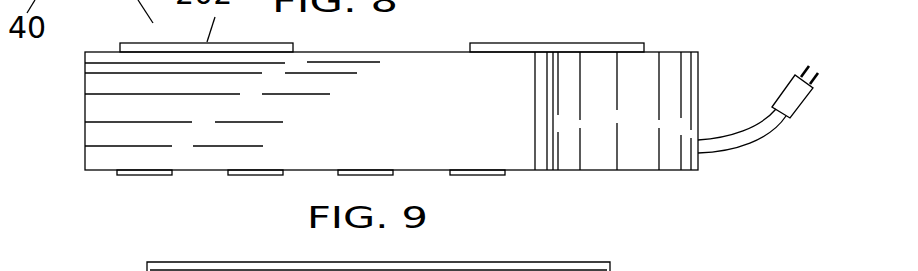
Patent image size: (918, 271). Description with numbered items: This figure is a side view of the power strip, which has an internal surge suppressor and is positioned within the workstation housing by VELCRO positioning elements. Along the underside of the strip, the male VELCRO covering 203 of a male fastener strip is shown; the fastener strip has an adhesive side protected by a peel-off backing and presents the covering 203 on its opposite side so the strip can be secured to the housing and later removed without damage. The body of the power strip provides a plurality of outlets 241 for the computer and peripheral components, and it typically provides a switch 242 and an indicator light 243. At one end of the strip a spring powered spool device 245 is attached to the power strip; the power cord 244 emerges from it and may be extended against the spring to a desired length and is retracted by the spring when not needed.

The male VELCRO covering 203 is at (158, 53).
The outlets 241 is at (145, 173).
The switch 242 is at (478, 173).
The indicator light 243 is at (562, 42).
The power cord 244 is at (737, 138).
The spring powered spool device 245 is at (638, 99).